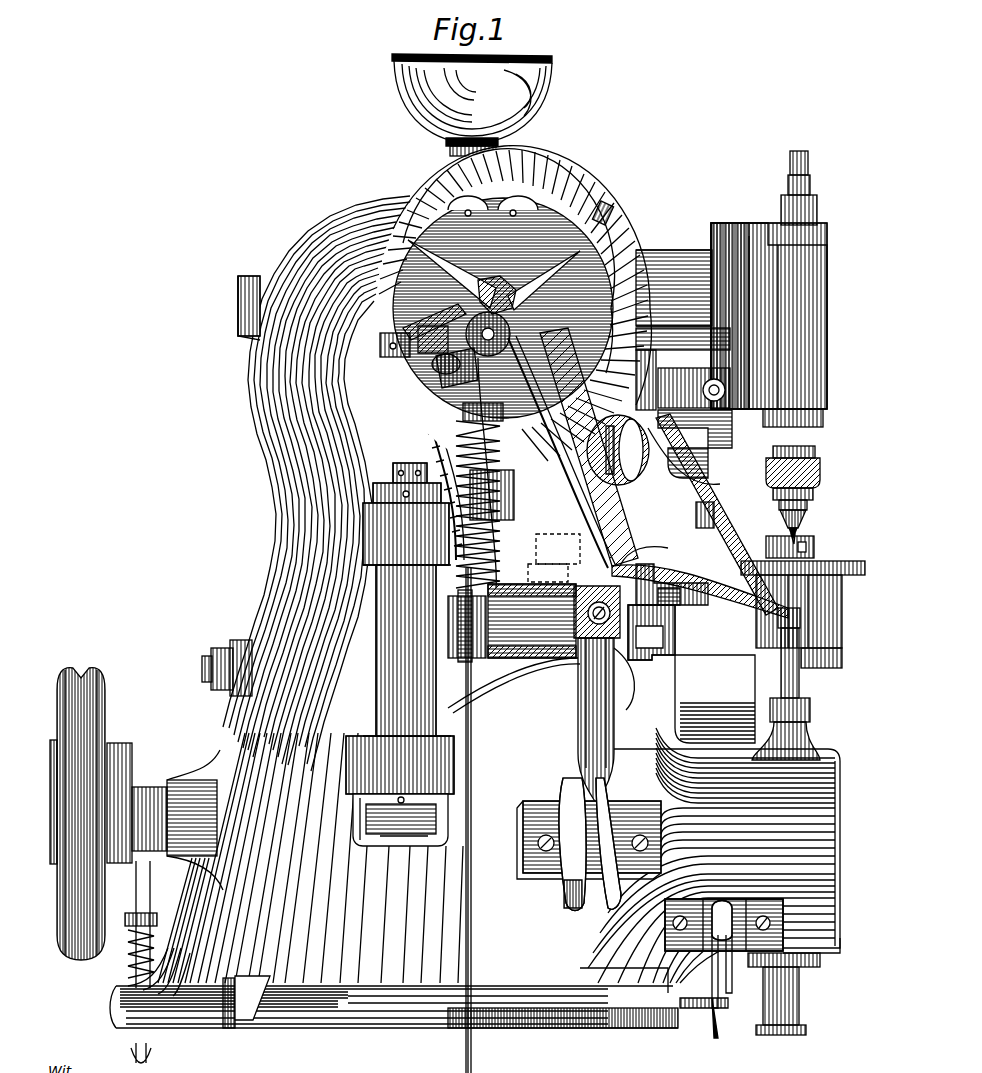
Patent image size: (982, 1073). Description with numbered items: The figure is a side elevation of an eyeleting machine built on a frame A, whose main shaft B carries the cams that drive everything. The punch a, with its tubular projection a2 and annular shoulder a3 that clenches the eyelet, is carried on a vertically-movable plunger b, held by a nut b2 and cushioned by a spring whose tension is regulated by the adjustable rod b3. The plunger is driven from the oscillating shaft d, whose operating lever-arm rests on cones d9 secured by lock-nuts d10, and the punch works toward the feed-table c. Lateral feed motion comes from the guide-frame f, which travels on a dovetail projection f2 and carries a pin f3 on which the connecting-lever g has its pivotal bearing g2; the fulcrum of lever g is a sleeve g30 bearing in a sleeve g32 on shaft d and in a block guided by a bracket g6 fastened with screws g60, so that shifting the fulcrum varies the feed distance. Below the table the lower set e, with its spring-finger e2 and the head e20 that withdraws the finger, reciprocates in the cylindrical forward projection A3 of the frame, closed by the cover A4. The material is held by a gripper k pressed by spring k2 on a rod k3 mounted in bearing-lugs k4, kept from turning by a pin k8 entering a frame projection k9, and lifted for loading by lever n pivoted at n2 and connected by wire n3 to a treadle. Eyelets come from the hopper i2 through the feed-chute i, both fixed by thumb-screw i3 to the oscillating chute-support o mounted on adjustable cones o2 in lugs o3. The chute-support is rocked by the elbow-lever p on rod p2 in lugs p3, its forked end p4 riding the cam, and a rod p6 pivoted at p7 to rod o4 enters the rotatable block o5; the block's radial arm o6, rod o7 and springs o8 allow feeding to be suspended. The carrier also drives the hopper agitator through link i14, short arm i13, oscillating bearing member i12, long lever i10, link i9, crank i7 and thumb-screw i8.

The frame A is at (394, 634).
The forward projection of the frame A3 is at (710, 860).
The cover A4 is at (826, 946).
The main shaft B is at (372, 840).
The punch a is at (790, 512).
The tubular projection a2 is at (790, 528).
The annular shoulder a3 is at (778, 508).
The plunger b is at (806, 182).
The nut or cap b2 is at (812, 466).
The adjustable rod b3 is at (800, 156).
The feed-table c is at (848, 562).
The shaft d is at (230, 302).
The cones d9 is at (198, 655).
The lock-nuts d10 is at (202, 676).
The lower set e is at (792, 645).
The spring-finger e2 is at (772, 618).
The head e20 is at (775, 1028).
The guide-frame f is at (800, 262).
The dovetail projection f2 is at (790, 292).
The pin or projection f3 is at (790, 352).
The intermediate lever g is at (672, 392).
The pivotal bearing g2 is at (700, 430).
The support or bracket g6 is at (706, 474).
The sleeve g30 is at (640, 376).
The sleeve g32 is at (646, 322).
The screws g60 is at (700, 452).
The eyelet-feed chute i is at (648, 473).
The hopper i2 is at (560, 170).
The thumb-screw i3 is at (600, 470).
The crank i7 is at (464, 328).
The thumb-screw i8 is at (445, 365).
The link i9 is at (398, 312).
The lever i10 is at (386, 335).
The oscillating bearing member i12 is at (495, 467).
The short projecting arm i13 is at (544, 555).
The link i14 is at (644, 544).
The gripper k is at (806, 543).
The spring k2 is at (432, 840).
The rod k3 is at (415, 840).
The bearing-lugs k4 is at (715, 699).
The pin k8 is at (640, 592).
The projection k9 is at (657, 632).
The lever n is at (724, 940).
The pivot n2 is at (659, 916).
The wire n3 is at (710, 1036).
The oscillating frame o is at (509, 473).
The adjustable cones o2 is at (372, 560).
The lugs o3 is at (400, 628).
The rod o4 is at (512, 640).
The block o5 is at (540, 660).
The radial arm o6 is at (440, 590).
The rod o7 is at (464, 800).
The springs o8 is at (478, 504).
The lever p is at (568, 762).
The rod p2 is at (652, 836).
The lugs p3 is at (540, 872).
The forked end p4 is at (560, 890).
The vertically-movable rod p6 is at (630, 672).
The pivotal connection p7 is at (596, 598).